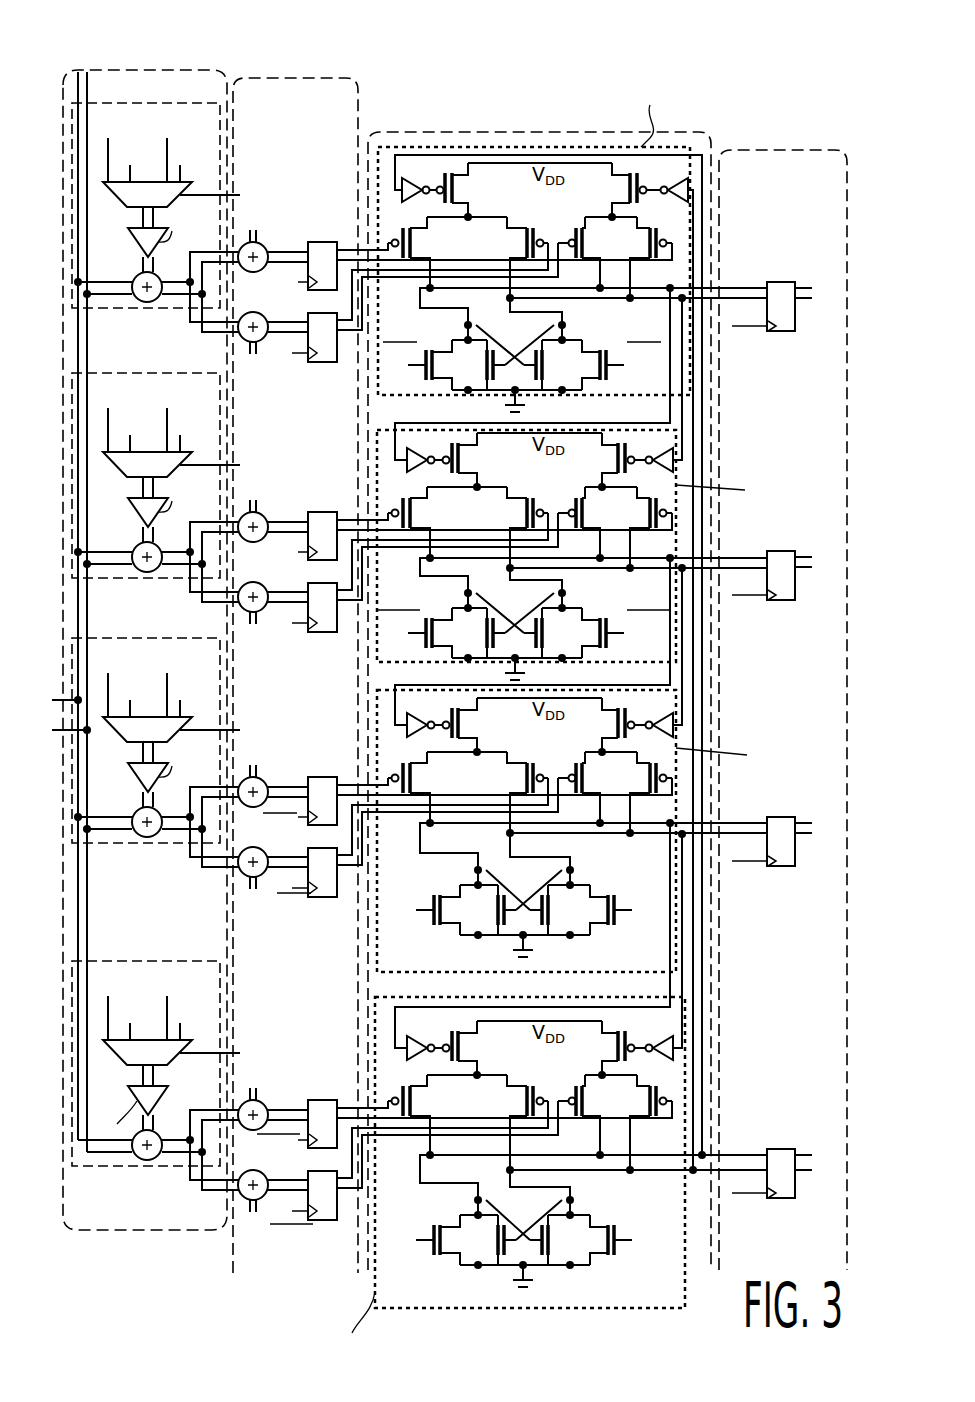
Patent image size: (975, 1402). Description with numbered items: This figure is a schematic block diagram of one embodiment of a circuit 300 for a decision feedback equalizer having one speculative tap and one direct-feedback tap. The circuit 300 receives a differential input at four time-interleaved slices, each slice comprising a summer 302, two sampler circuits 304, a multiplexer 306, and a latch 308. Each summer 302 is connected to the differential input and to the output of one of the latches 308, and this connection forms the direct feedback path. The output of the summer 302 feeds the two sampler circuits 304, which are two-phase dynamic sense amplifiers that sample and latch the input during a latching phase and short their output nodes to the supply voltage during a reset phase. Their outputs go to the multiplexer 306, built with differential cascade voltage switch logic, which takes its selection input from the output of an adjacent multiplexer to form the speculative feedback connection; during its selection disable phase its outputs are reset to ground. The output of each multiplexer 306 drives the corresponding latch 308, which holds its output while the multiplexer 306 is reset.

The circuit for a decision feedback equalizer 300 is at (725, 78).
The summer 302 is at (159, 1231).
The sampler circuit 304 is at (307, 78).
The multiplexer 306 is at (543, 132).
The latch 308 is at (795, 150).